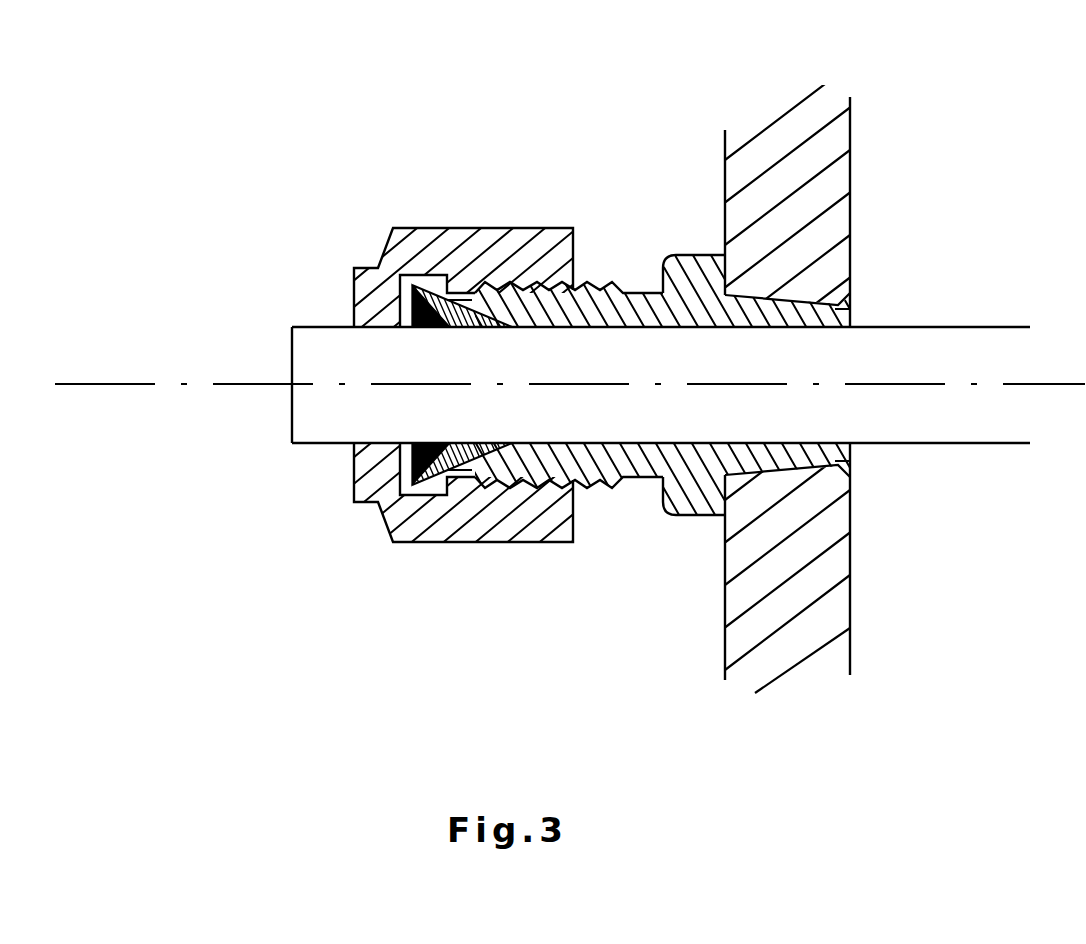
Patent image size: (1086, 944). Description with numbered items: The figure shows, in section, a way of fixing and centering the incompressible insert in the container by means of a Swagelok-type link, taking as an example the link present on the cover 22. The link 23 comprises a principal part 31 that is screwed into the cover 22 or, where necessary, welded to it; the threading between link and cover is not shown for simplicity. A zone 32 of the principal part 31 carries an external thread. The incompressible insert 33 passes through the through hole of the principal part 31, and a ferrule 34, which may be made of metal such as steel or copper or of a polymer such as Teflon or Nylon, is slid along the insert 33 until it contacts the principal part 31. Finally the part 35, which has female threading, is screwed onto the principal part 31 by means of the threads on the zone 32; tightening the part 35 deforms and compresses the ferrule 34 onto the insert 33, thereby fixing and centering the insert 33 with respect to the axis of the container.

The cover 22 is at (825, 192).
The link 23 is at (555, 330).
The principal part 31 is at (695, 272).
The threaded zone 32 is at (593, 280).
The incompressible insert 33 is at (333, 399).
The ferrule 34 is at (410, 462).
The part with female threading 35 is at (380, 250).